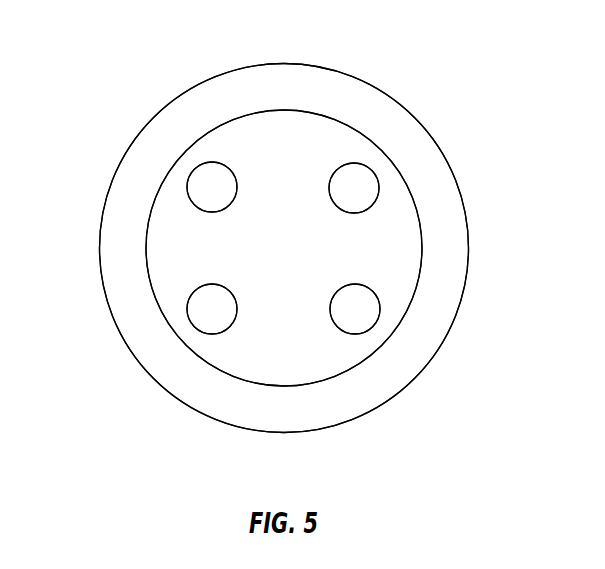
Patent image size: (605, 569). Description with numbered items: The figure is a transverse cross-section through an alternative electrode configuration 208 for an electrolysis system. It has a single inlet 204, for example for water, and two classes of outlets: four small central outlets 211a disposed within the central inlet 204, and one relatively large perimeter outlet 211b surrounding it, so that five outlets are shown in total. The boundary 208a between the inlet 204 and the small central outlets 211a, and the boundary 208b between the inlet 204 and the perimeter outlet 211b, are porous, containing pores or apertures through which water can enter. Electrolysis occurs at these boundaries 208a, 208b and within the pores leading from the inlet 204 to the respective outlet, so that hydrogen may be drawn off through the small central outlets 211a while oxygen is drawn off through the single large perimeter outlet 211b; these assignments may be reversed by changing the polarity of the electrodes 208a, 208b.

The electrode configuration 208 is at (488, 70).
The inlet 204 is at (283, 150).
The boundary 208a is at (190, 172).
The boundary 208b is at (357, 130).
The small central outlets 211a is at (210, 182).
The perimeter outlet 211b is at (125, 213).